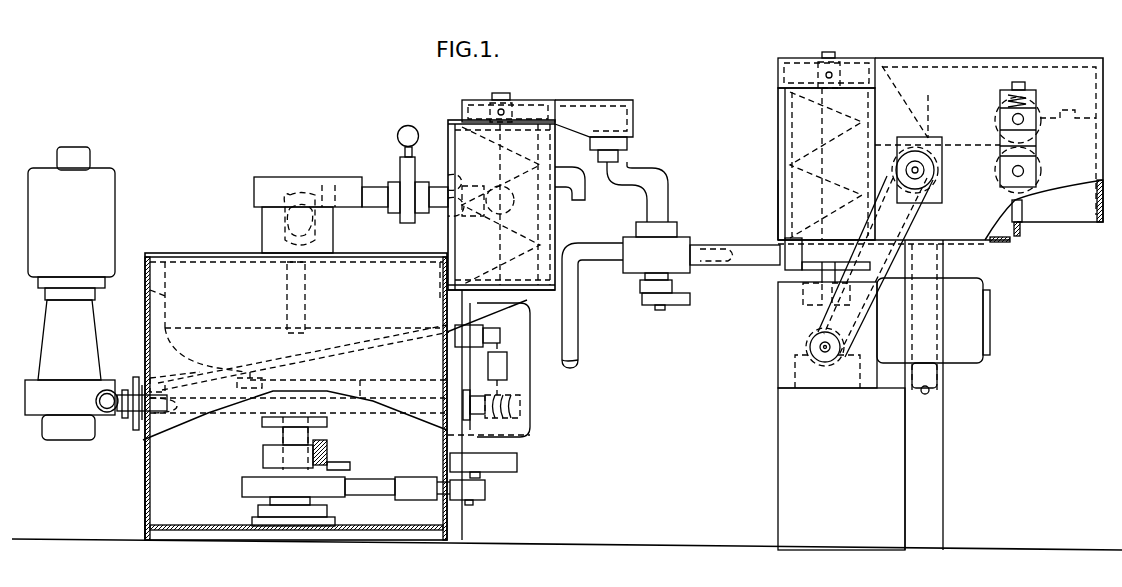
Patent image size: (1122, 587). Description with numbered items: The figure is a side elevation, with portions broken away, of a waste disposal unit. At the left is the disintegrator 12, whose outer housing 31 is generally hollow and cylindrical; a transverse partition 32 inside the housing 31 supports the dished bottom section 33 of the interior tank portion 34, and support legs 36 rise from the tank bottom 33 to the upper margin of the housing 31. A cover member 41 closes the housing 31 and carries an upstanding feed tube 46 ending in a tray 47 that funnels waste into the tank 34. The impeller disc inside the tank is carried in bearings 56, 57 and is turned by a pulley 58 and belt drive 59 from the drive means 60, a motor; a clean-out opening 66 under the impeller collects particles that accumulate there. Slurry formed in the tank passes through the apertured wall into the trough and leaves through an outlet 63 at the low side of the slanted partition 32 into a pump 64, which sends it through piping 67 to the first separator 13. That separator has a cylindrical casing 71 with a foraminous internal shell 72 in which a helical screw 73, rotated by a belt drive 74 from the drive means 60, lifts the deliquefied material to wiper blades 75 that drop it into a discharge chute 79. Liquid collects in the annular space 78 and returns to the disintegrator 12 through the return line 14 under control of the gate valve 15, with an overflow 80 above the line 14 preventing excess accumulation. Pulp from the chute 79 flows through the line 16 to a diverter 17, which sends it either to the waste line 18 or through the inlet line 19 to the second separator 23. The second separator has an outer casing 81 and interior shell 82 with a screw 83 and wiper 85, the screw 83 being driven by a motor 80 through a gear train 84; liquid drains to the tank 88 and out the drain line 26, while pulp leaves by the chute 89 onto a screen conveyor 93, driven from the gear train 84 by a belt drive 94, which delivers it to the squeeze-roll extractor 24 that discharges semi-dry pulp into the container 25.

The disintegrator 12 is at (189, 252).
The first separator 13 is at (560, 216).
The return line 14 is at (372, 186).
The gate valve 15 is at (407, 212).
The line 16 is at (660, 202).
The diverter 17 is at (669, 267).
The waste line 18 is at (572, 336).
The inlet line 19 is at (744, 250).
The second separator 23 is at (854, 58).
The squeeze-roll extractor 24 is at (1040, 142).
The container 25 is at (1034, 419).
The drain line 26 is at (924, 394).
The outer housing 31 is at (144, 460).
The transverse partition 32 is at (323, 362).
The dished bottom section 33 is at (196, 380).
The interior tank portion 34 is at (395, 398).
The support legs 36 is at (150, 298).
The cover member 41 is at (226, 253).
The feed tube 46 is at (333, 250).
The tray 47 is at (282, 185).
The bearing 56 is at (263, 460).
The bearing 57 is at (268, 510).
The pulley 58 is at (345, 478).
The belt drive 59 is at (386, 489).
The drive means 60 is at (531, 420).
The outlet 63 is at (176, 417).
The pump 64 is at (73, 409).
The clean-out opening 66 is at (237, 384).
The piping 67 is at (472, 396).
The casing 71 is at (455, 172).
The foraminous internal shell 72 is at (455, 150).
The helical screw 73 is at (510, 158).
The belt drive 74 is at (515, 462).
The wiper blades 75 is at (531, 101).
The annular space 78 is at (550, 236).
The discharge chute 79 is at (580, 108).
The overflow 80 is at (568, 166).
The outer casing 81 is at (776, 148).
The interior shell 82 is at (777, 202).
The screw 83 is at (842, 188).
The gear train 84 is at (812, 348).
The wiper 85 is at (790, 66).
The tank 88 is at (1012, 232).
The chute 89 is at (926, 102).
The screen conveyor 93 is at (950, 142).
The belt drive 94 is at (900, 226).